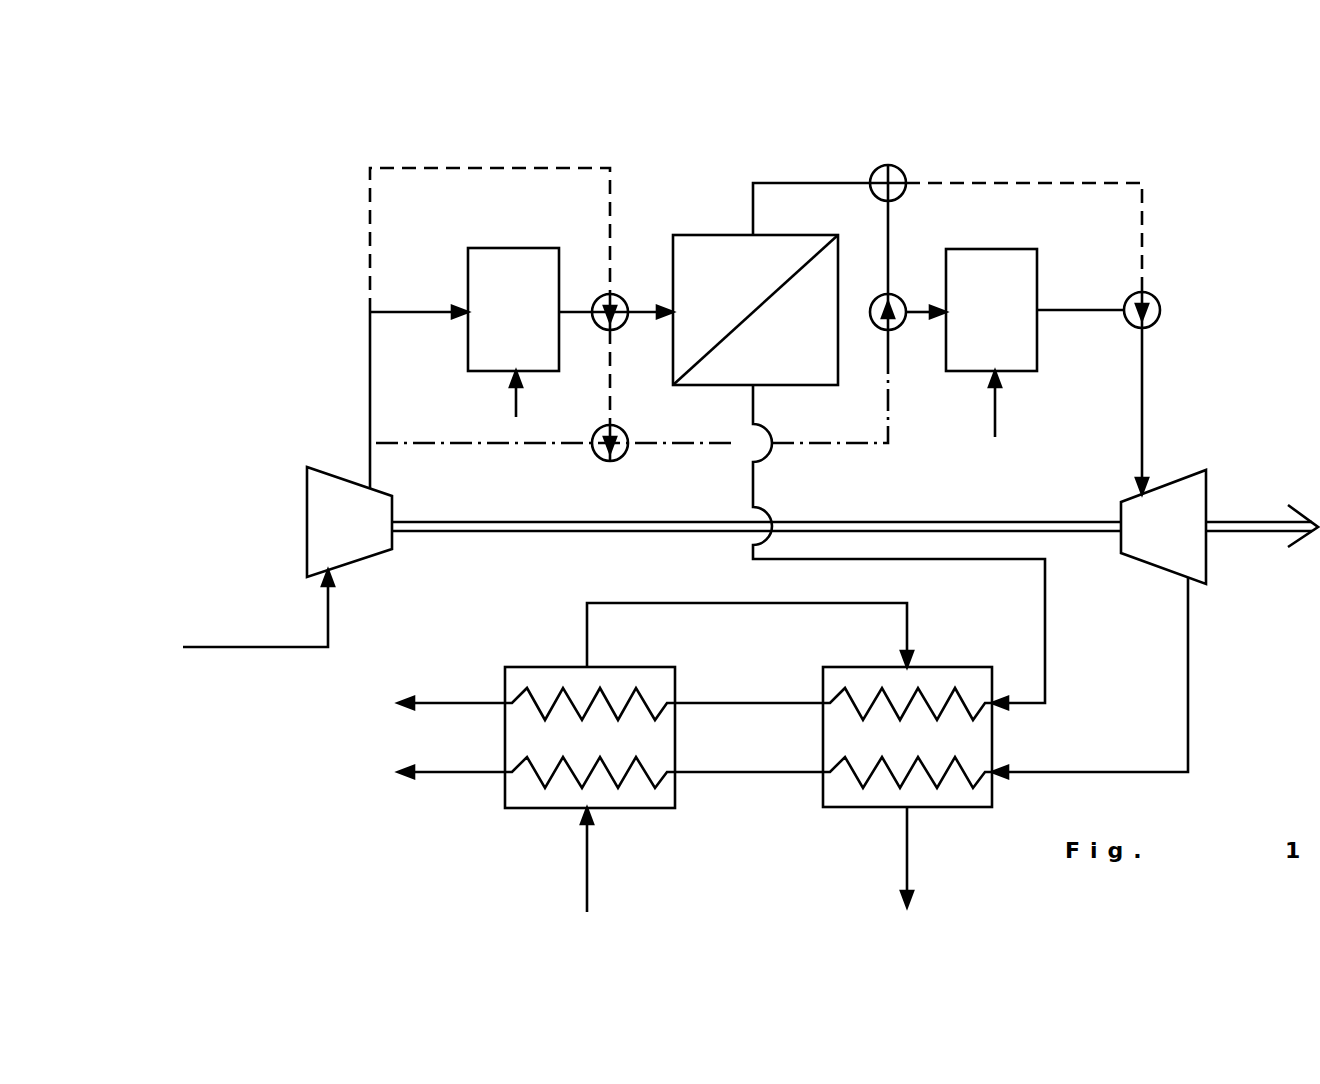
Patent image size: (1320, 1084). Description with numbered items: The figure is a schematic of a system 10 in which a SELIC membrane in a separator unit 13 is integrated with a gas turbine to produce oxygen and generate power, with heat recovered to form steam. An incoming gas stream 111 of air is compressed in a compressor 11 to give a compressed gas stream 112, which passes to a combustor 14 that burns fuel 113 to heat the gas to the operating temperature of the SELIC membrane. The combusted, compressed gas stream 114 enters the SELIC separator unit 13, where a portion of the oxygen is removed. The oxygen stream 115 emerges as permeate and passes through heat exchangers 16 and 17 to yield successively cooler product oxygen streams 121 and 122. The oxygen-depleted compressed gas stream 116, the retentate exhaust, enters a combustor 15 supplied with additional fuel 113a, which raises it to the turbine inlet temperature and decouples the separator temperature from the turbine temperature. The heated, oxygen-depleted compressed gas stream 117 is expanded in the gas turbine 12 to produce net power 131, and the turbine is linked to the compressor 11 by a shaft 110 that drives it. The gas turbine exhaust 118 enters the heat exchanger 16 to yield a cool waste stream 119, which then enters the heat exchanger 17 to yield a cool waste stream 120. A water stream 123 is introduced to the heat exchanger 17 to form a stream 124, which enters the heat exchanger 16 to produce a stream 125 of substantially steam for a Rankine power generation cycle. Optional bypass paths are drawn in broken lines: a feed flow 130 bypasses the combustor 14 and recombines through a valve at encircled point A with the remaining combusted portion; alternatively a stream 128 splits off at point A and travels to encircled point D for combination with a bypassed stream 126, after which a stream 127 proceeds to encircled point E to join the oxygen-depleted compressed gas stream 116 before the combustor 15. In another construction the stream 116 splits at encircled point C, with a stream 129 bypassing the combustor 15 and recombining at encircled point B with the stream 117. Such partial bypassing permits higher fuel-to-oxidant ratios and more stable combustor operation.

The system 10 is at (1103, 162).
The compressor 11 is at (337, 539).
The gas turbine 12 is at (1153, 539).
The SELIC separator unit 13 is at (724, 304).
The combustor 14 is at (500, 322).
The combustor 15 is at (979, 322).
The heat exchanger 16 is at (995, 745).
The heat exchanger 17 is at (678, 745).
The shaft 110 is at (570, 521).
The gas stream 111 is at (218, 648).
The compressed gas stream 112 is at (368, 408).
The fuel 113 is at (516, 407).
The additional fuel 113a is at (1000, 405).
The combusted, compressed gas stream 114 is at (640, 307).
The oxygen stream 115 is at (755, 407).
The oxygen-depleted compressed gas stream 116 is at (852, 183).
The heated, oxygen-depleted compressed gas stream 117 is at (1062, 314).
The gas turbine exhaust 118 is at (1190, 625).
The cool waste stream 119 is at (752, 774).
The cool waste stream 120 is at (453, 774).
The product oxygen stream 121 is at (797, 700).
The product oxygen stream 122 is at (468, 701).
The water stream 123 is at (587, 862).
The stream 124 is at (742, 602).
The stream 125 is at (907, 840).
The bypassed stream 126 is at (410, 442).
The stream 127 is at (805, 447).
The stream 128 is at (612, 368).
The stream 129 is at (985, 183).
The feed flow 130 is at (420, 168).
The net power 131 is at (1257, 520).
The encircled point A is at (604, 296).
The encircled point B is at (1160, 310).
The encircled point C is at (903, 196).
The encircled point D is at (620, 458).
The encircled point E is at (900, 298).